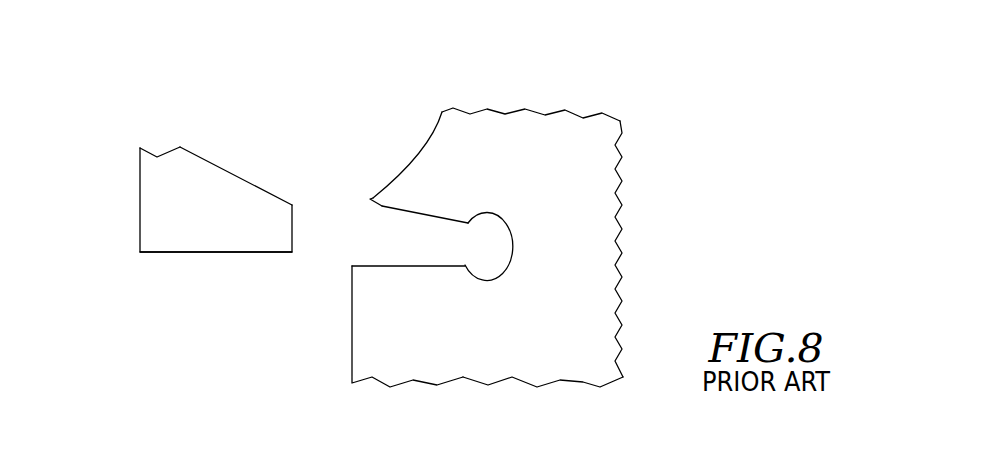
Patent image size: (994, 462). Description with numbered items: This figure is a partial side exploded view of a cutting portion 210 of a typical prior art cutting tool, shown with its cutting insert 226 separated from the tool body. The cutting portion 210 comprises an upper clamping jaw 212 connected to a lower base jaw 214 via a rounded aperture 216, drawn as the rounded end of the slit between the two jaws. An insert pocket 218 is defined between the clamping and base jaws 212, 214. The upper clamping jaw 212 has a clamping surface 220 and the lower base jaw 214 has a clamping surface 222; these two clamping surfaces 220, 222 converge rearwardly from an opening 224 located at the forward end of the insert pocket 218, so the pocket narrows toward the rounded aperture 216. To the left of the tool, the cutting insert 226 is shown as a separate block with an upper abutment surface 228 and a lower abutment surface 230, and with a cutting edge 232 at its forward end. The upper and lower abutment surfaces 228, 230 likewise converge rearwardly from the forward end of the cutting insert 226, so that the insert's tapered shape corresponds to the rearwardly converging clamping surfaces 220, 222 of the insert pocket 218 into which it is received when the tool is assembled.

The cutting portion 210 is at (407, 98).
The upper clamping jaw 212 is at (419, 168).
The lower base jaw 214 is at (383, 305).
The rounded aperture 216 is at (493, 263).
The insert pocket 218 is at (433, 262).
The clamping surface 220 is at (390, 207).
The clamping surface 222 is at (381, 266).
The opening 224 is at (352, 223).
The cutting insert 226 is at (103, 268).
The upper abutment surface 228 is at (214, 165).
The lower abutment surface 230 is at (217, 253).
The cutting edge 232 is at (140, 148).